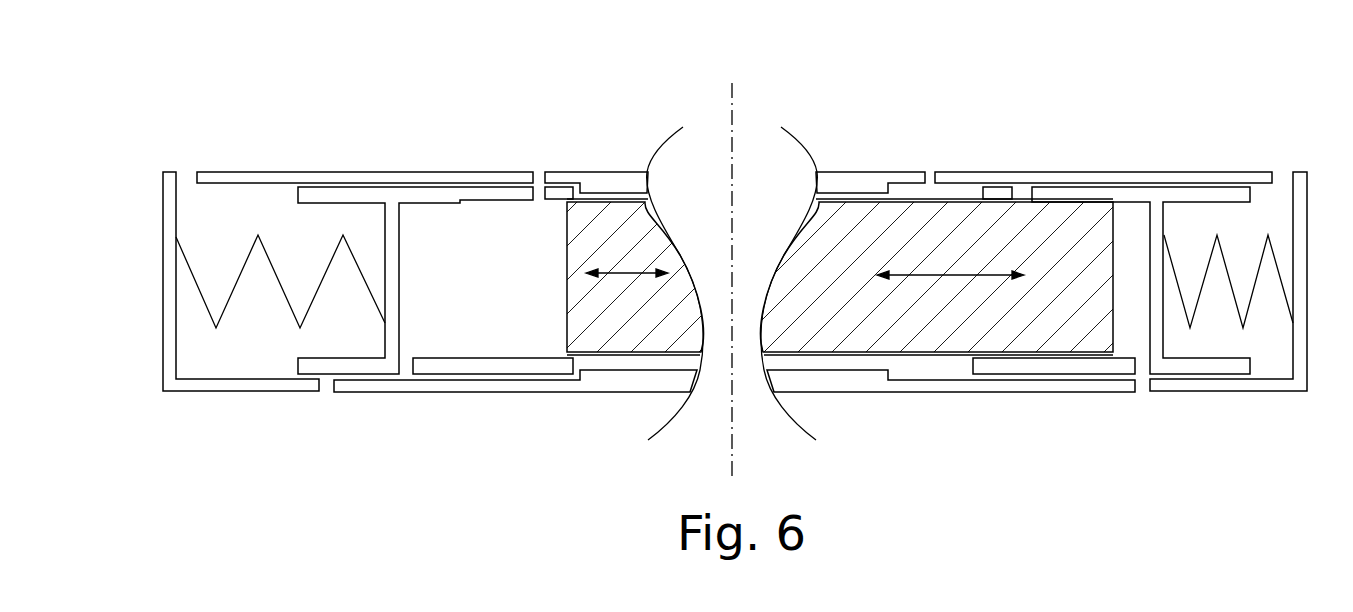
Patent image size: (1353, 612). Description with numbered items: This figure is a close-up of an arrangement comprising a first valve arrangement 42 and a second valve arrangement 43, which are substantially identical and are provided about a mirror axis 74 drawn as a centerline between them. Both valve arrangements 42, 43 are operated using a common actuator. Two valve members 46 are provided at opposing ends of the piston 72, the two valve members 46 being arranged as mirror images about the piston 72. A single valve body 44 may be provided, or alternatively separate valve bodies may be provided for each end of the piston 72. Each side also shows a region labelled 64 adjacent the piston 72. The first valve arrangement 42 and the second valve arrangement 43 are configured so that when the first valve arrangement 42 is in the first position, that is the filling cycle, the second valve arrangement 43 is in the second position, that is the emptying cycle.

The first valve arrangement 42 is at (277, 119).
The second valve arrangement 43 is at (1180, 124).
The valve body 44 is at (250, 175).
The valve member 46 is at (428, 187).
The spring cavity 64 is at (497, 287).
The piston 72 is at (644, 306).
The mirror axis 74 is at (732, 263).